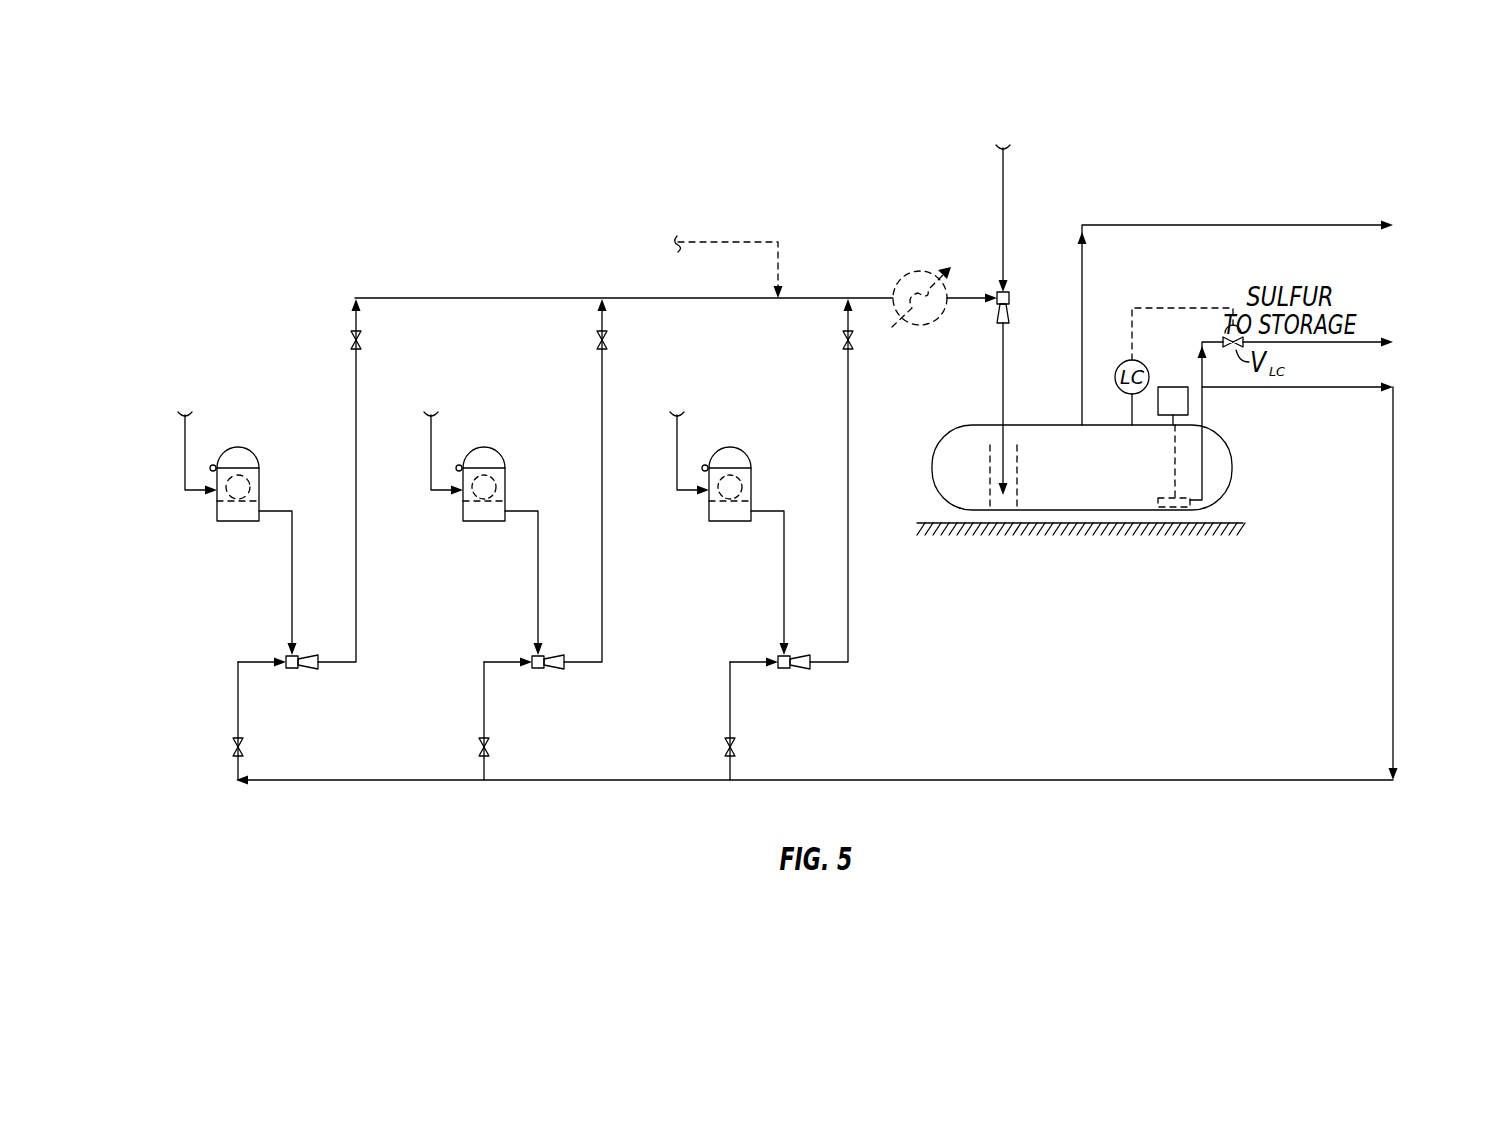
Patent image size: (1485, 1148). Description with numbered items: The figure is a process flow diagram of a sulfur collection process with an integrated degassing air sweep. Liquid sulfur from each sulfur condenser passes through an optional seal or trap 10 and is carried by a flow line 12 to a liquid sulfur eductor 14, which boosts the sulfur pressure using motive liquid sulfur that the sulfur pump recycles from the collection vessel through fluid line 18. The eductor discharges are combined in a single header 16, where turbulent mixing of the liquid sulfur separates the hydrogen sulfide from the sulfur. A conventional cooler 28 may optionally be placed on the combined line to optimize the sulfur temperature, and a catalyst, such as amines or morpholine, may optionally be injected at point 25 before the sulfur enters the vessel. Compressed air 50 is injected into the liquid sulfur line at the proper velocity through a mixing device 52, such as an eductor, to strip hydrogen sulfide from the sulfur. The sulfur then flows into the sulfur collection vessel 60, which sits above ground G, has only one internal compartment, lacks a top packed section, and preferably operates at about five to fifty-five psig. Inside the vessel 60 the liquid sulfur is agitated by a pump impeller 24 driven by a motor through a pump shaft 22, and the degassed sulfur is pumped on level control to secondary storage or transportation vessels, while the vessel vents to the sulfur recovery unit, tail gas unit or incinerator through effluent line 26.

The seal or trap 10 is at (256, 522).
The flow line 12 is at (292, 585).
The liquid sulfur eductor 14 is at (291, 668).
The header 16 is at (450, 298).
The fluid line 18 is at (1393, 582).
The pump shaft 22 is at (1175, 462).
The pump impeller 24 is at (1163, 500).
The catalyst injection point 25 is at (727, 242).
The effluent line 26 is at (1101, 225).
The cooler 28 is at (917, 326).
The compressed air 50 is at (1003, 178).
The mixing device 52 is at (1010, 298).
The sulfur collection vessel 60 is at (1228, 467).
The ground G is at (990, 525).